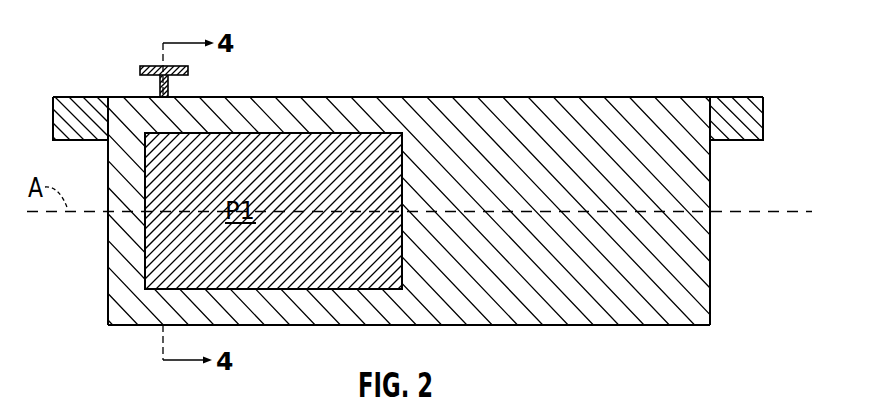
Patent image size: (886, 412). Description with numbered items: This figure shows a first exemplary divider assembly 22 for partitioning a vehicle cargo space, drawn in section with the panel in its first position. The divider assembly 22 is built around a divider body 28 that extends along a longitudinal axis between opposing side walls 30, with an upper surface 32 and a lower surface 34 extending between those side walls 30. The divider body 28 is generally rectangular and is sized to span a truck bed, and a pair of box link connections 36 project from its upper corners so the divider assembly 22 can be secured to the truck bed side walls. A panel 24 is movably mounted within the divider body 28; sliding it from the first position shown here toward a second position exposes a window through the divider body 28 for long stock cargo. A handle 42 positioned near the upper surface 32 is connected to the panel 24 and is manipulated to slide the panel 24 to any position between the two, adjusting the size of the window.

The divider assembly 22 is at (571, 41).
The panel 24 is at (403, 182).
The divider body 28 is at (592, 113).
The side walls 30 is at (107, 280).
The upper surface 32 is at (470, 97).
The lower surface 34 is at (552, 310).
The box link connections 36 is at (81, 97).
The handle 42 is at (151, 66).